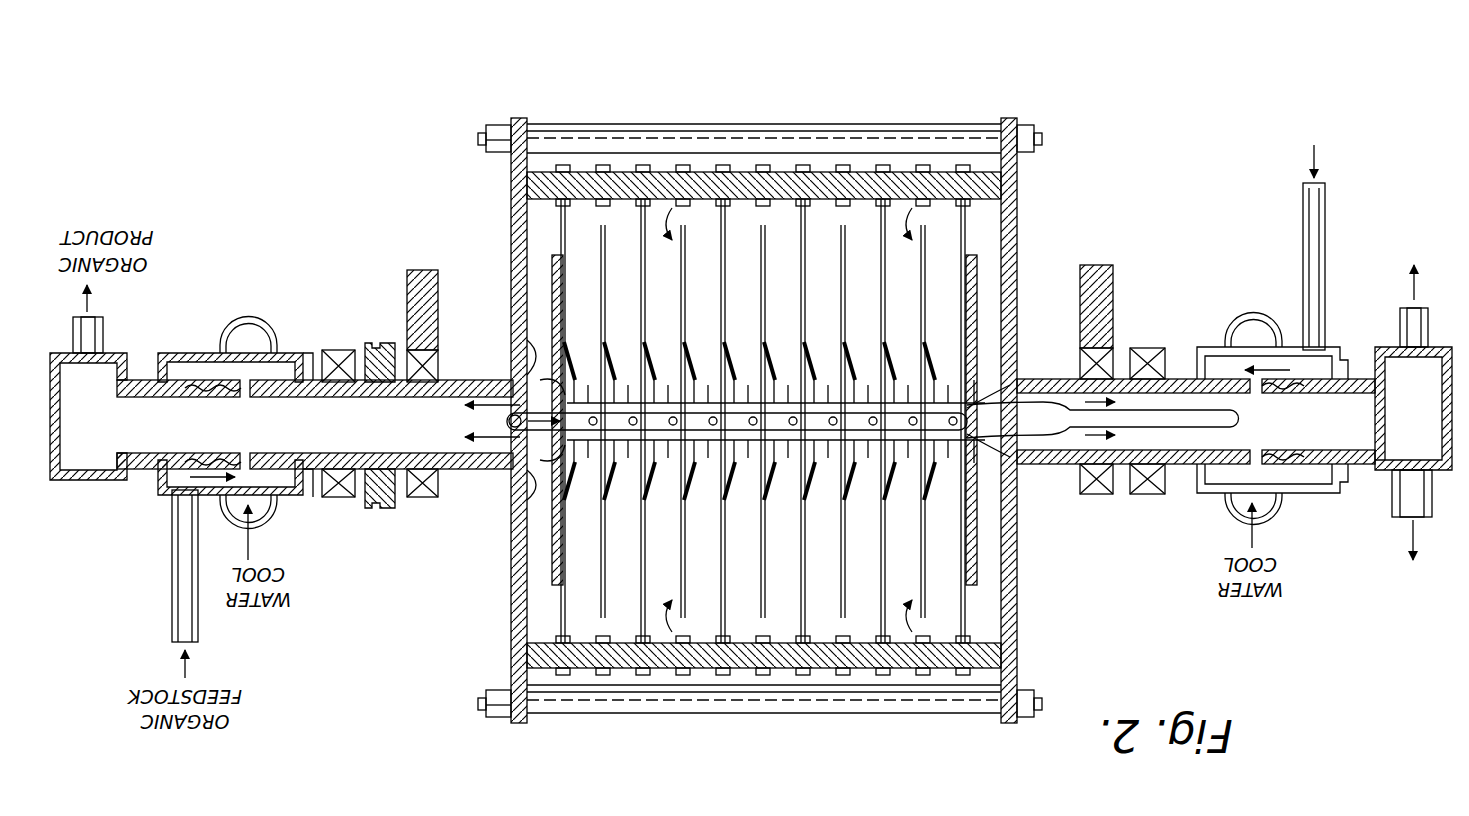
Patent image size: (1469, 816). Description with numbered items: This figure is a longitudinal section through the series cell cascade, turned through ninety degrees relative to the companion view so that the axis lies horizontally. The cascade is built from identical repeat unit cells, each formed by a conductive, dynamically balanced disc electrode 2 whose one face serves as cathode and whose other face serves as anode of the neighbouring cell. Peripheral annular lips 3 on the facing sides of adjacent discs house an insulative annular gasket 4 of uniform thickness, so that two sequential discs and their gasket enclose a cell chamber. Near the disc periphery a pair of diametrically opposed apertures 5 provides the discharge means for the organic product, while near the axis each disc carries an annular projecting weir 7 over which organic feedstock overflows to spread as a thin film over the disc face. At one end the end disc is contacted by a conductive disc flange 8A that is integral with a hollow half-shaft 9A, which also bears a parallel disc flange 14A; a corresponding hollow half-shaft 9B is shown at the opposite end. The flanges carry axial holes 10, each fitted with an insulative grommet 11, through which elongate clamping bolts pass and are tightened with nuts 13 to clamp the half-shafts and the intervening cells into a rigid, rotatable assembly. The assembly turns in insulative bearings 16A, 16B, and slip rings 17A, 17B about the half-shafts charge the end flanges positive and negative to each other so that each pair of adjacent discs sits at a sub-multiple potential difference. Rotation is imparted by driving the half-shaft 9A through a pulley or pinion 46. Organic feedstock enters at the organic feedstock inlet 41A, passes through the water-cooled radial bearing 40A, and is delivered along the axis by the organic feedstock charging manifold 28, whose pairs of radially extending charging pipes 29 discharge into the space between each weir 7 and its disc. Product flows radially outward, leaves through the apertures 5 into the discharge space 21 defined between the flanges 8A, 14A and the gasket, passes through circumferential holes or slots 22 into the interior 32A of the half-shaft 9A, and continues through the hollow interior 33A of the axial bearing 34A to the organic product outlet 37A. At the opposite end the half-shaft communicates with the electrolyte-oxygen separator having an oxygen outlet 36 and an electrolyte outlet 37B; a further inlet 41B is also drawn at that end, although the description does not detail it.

The disc electrode 2 is at (740, 570).
The peripheral annular lips 3 is at (690, 590).
The insulative annular gasket 4 is at (855, 560).
The apertures 5 is at (940, 620).
The annular projecting weir 7 is at (893, 477).
The conductive disc flange 8A is at (511, 225).
The hollow half-shaft 9A is at (312, 360).
The hollow half-shaft 9B is at (1177, 377).
The axial holes 10 is at (1017, 155).
The insulative grommet 11 is at (1008, 125).
The nuts 13 is at (508, 148).
The disc flange 14A is at (511, 265).
The insulative bearing 16A is at (330, 498).
The insulative bearing 16B is at (1150, 495).
The slip ring 17A is at (425, 498).
The slip ring 17B is at (1095, 495).
The discharge space 21 is at (552, 560).
The circumferential holes or slots 22 is at (513, 478).
The organic feedstock charging manifold 28 is at (857, 417).
The charging pipes 29 is at (600, 397).
The interior of half-shaft 32A is at (390, 412).
The hollow interior of axial bearing 33A is at (240, 408).
The axial bearing 34A is at (235, 385).
The oxygen outlet 36 is at (1435, 588).
The organic product outlet 37A is at (73, 170).
The electrolyte outlet 37B is at (1367, 207).
The water-cooled radial bearing 40A is at (290, 340).
The organic feedstock inlet 41A is at (152, 757).
The inlet pipe 41B is at (1362, 120).
The pulley or pinion 46 is at (385, 343).